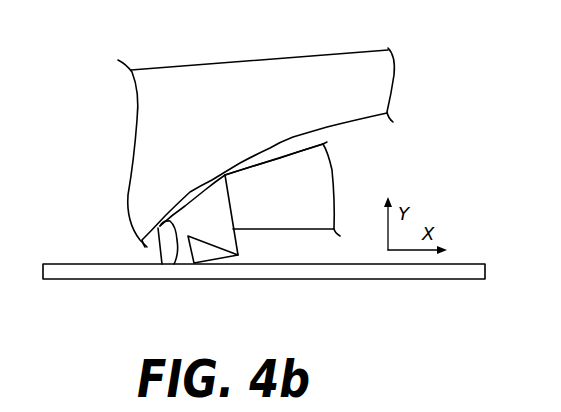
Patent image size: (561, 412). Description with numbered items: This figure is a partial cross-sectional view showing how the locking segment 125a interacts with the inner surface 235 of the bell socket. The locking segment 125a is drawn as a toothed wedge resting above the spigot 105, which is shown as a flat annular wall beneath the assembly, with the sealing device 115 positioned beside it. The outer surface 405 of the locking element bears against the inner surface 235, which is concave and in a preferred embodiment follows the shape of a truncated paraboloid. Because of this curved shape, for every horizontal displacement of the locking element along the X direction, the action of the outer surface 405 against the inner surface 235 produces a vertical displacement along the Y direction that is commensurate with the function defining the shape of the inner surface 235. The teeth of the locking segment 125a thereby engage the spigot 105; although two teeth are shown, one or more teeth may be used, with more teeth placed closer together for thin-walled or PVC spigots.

The spigot 105 is at (407, 279).
The sealing device 115 is at (335, 193).
The locking segment 125a is at (235, 224).
The inner surface 235 is at (253, 153).
The outer surface 405 is at (175, 252).